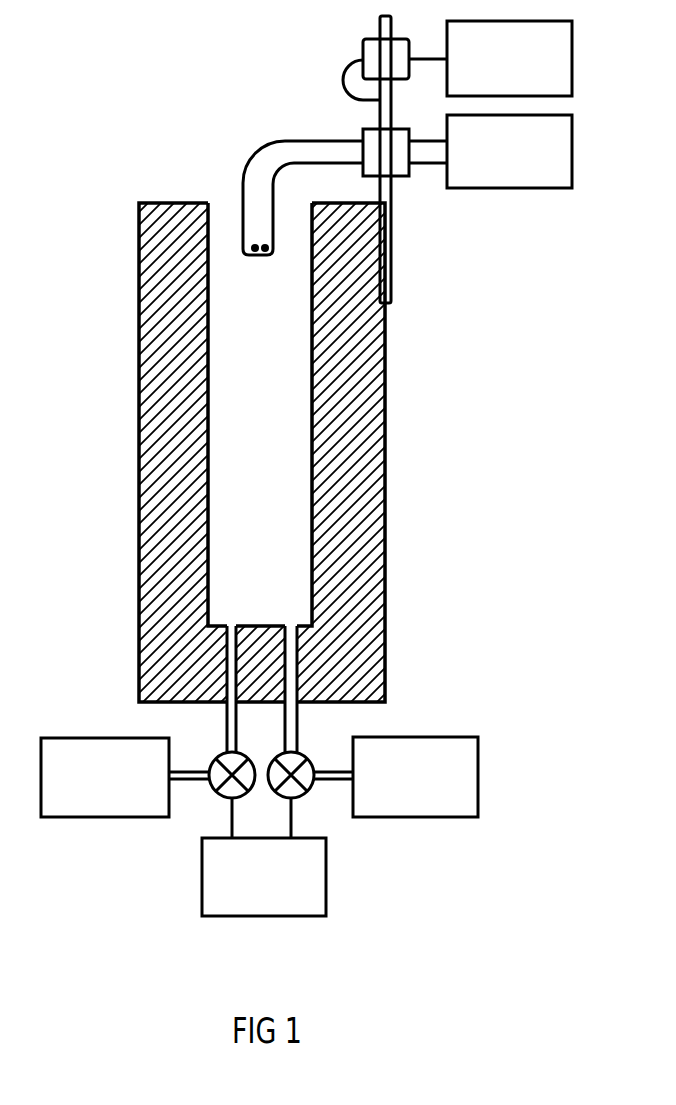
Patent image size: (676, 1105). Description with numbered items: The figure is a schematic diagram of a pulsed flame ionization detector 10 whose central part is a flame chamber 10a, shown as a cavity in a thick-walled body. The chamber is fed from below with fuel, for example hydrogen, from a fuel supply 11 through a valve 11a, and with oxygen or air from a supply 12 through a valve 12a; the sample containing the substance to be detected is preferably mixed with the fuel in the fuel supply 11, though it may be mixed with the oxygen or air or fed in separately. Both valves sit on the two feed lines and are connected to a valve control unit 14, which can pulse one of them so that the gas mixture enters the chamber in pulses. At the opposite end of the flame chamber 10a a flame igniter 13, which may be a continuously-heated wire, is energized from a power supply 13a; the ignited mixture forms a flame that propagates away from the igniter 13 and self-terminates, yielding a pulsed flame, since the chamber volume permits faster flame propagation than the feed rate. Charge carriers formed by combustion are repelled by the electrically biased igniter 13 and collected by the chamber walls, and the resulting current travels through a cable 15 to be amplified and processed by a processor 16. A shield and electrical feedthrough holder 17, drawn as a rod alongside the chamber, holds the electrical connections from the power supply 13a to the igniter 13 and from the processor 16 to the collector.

The pulsed flame ionization detector 10 is at (138, 470).
The flame chamber 10a is at (297, 455).
The fuel supply 11 is at (114, 797).
The valve 11a is at (213, 800).
The supply 12 is at (426, 797).
The valve 12a is at (312, 800).
The flame igniter 13 is at (265, 260).
The power supply 13a is at (542, 164).
The valve control unit 14 is at (284, 896).
The cable 15 is at (340, 87).
The processor 16 is at (526, 77).
The shield and electrical feedthrough holder 17 is at (396, 229).